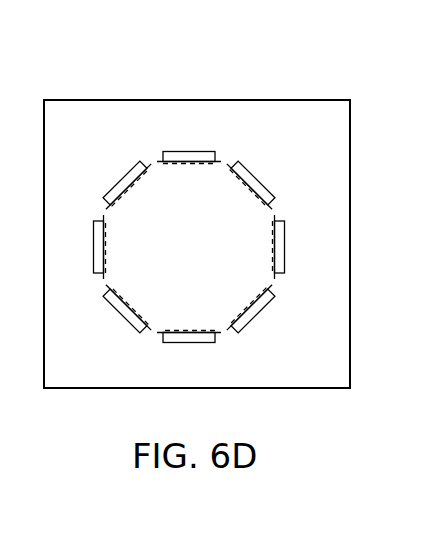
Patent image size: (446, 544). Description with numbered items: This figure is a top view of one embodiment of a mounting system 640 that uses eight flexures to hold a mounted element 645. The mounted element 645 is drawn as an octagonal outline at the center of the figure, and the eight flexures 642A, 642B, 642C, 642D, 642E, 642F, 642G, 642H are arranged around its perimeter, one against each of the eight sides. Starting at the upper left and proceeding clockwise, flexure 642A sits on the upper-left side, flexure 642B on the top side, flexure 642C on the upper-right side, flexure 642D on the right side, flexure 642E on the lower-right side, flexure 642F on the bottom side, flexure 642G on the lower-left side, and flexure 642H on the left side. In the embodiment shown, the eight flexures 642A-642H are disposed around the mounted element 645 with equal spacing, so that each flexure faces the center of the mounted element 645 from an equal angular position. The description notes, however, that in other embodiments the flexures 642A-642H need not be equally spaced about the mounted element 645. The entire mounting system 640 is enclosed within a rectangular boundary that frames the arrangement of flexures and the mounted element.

The mounting system 640 is at (268, 98).
The mounted element 645 is at (123, 221).
The flexure 642A is at (122, 185).
The flexure 642B is at (202, 156).
The flexure 642C is at (255, 180).
The flexure 642D is at (280, 253).
The flexure 642E is at (258, 310).
The flexure 642F is at (180, 337).
The flexure 642G is at (115, 305).
The flexure 642H is at (97, 248).